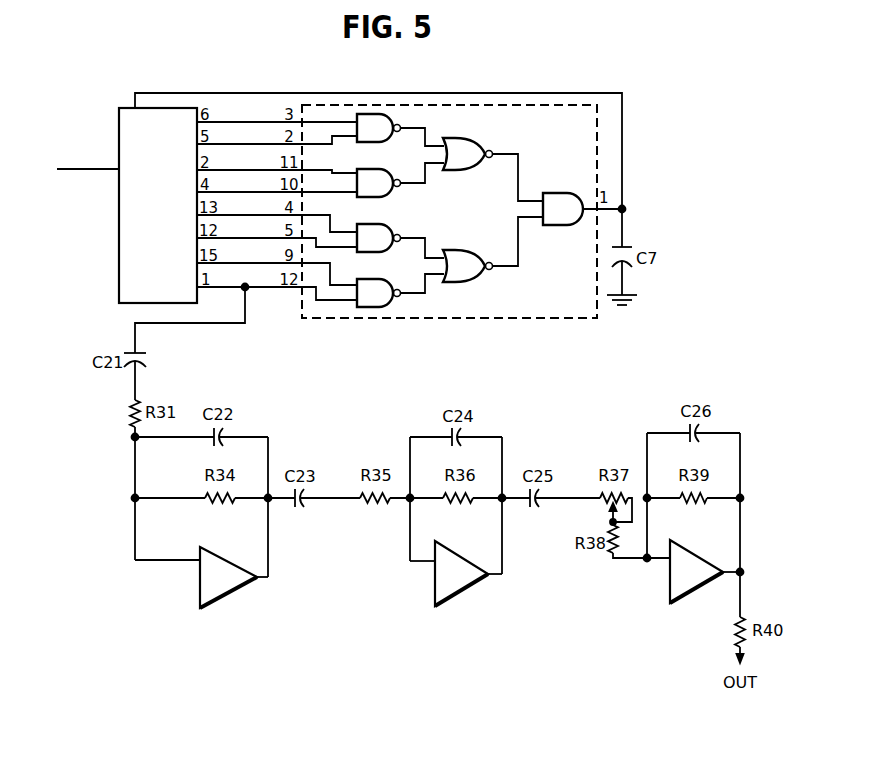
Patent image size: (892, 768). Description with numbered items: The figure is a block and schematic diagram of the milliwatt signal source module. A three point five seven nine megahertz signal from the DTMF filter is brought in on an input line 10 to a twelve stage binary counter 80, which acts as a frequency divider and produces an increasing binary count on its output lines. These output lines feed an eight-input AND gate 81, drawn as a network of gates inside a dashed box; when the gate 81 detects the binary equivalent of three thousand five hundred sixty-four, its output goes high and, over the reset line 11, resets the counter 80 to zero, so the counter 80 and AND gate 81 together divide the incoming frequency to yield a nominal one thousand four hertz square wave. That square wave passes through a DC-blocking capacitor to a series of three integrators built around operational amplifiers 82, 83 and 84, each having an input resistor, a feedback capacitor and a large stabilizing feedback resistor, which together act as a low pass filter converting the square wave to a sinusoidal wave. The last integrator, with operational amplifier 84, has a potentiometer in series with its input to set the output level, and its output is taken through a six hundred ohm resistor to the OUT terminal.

The input line to counter 10 is at (88, 159).
The reset line from gate output to counter 11 is at (370, 149).
The twelve stage binary counter 80 is at (119, 250).
The eight-input AND gate 81 is at (478, 320).
The operational amplifier 82 is at (226, 597).
The operational amplifier 83 is at (463, 590).
The operational amplifier 84 is at (690, 595).